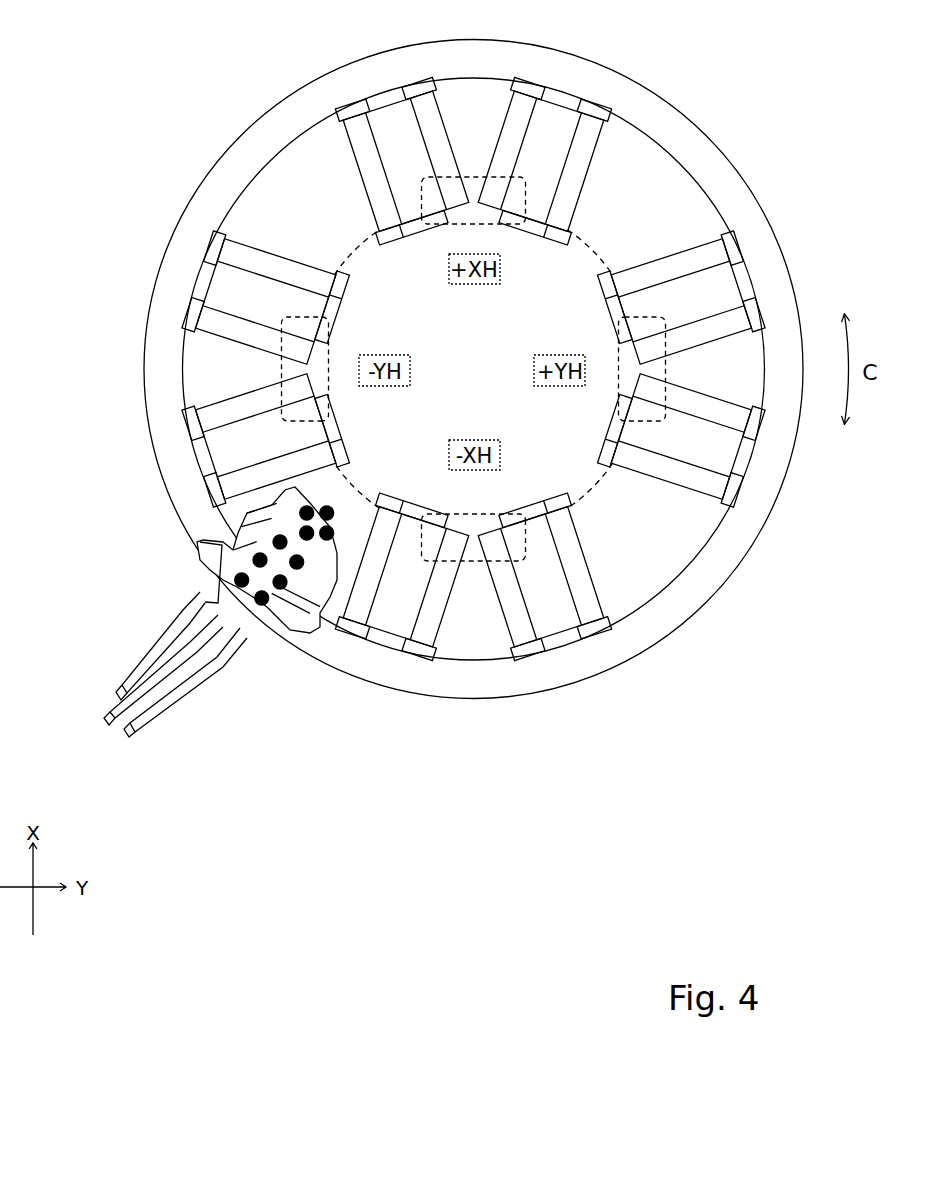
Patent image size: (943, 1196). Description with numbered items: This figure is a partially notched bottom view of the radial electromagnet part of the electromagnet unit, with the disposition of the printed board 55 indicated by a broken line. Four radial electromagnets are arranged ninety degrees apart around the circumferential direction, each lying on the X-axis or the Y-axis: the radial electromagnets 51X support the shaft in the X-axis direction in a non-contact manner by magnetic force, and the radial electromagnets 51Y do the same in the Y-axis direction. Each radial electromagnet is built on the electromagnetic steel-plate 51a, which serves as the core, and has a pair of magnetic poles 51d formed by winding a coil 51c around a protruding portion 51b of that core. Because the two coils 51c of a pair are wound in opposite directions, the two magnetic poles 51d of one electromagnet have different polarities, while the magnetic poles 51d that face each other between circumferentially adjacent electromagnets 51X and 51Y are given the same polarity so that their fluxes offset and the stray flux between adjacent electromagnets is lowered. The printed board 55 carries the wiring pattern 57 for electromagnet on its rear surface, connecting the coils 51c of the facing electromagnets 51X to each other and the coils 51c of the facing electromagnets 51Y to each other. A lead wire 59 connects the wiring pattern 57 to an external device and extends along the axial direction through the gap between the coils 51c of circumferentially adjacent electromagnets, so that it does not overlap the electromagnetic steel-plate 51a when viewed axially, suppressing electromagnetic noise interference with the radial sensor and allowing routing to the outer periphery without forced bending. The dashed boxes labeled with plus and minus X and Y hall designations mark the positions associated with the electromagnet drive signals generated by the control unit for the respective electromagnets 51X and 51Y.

The electromagnetic steel-plate 51a is at (478, 678).
The protruding portion 51b is at (550, 612).
The coil 51c is at (598, 585).
The magnetic pole 51d is at (418, 500).
The radial electromagnet supporting the shaft in the X-axis direction 51X is at (477, 215).
The radial electromagnet supporting the shaft in the Y-axis direction 51Y is at (321, 371).
The printed board 55 is at (585, 477).
The wiring pattern for electromagnet 57 is at (298, 574).
The lead wire 59 is at (262, 602).